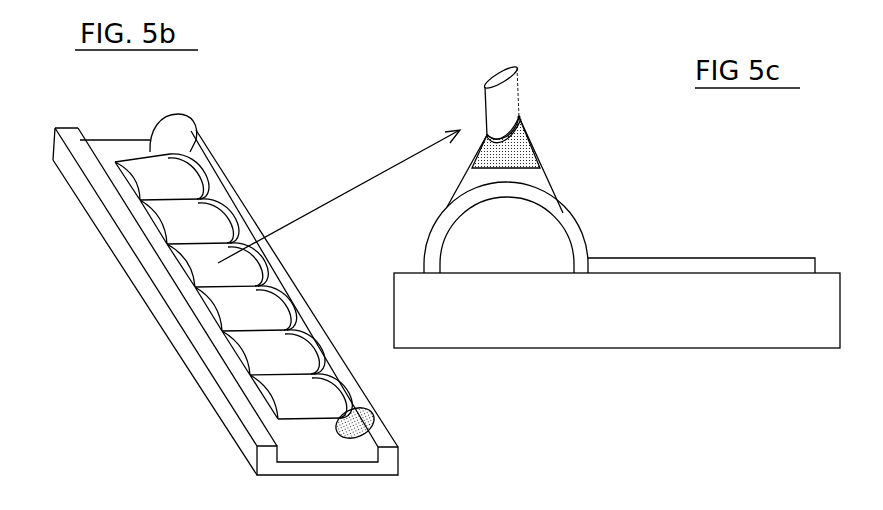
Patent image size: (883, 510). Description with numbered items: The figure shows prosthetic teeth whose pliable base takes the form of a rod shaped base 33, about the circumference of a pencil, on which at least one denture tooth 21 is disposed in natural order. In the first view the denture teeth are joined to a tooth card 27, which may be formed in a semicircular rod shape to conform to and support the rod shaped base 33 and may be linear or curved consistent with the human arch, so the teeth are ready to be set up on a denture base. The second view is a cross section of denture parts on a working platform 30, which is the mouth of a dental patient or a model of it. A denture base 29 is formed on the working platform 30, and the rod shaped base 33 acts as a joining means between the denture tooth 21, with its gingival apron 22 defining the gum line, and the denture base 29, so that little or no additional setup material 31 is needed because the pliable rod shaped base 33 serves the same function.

In FIG. 5C, the denture tooth 21 is at (510, 97).
In FIG. 5C, the gingival apron 22 is at (521, 118).
In FIG. 5B, the tooth card 27 is at (186, 350).
In FIG. 5C, the denture base 29 is at (728, 262).
In FIG. 5C, the working platform 30 is at (833, 283).
In FIG. 5C, the setup material 31 is at (545, 190).
In FIG. 5B, the rod shaped base 33 is at (190, 124).
In FIG. 5C, the rod shaped base 33 is at (523, 150).